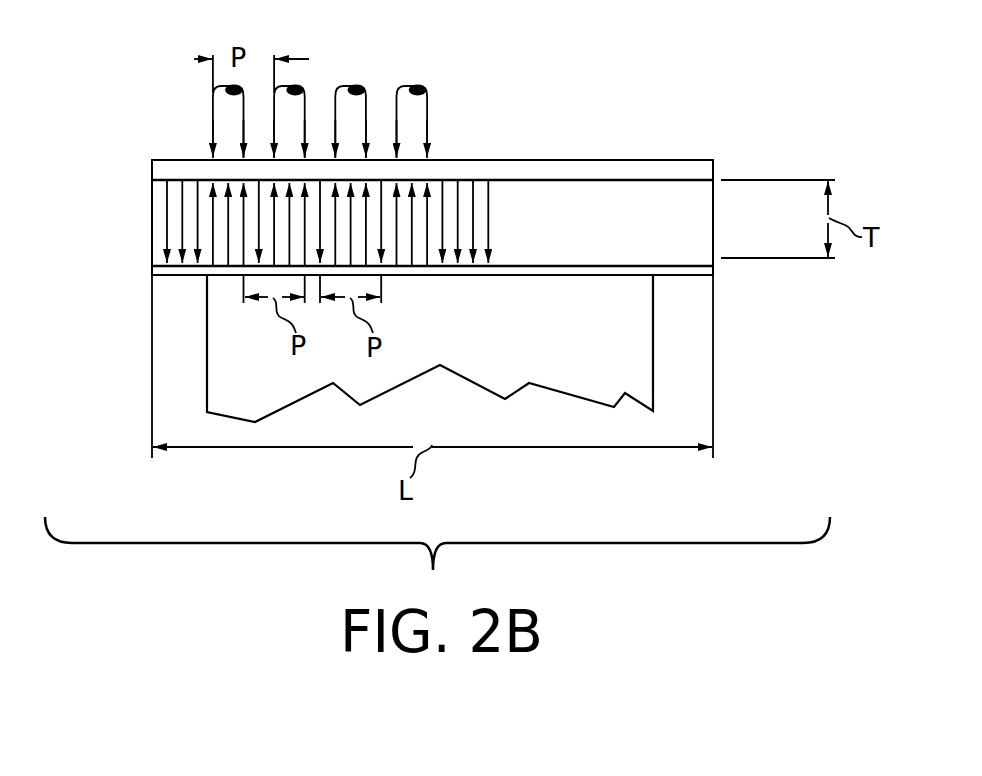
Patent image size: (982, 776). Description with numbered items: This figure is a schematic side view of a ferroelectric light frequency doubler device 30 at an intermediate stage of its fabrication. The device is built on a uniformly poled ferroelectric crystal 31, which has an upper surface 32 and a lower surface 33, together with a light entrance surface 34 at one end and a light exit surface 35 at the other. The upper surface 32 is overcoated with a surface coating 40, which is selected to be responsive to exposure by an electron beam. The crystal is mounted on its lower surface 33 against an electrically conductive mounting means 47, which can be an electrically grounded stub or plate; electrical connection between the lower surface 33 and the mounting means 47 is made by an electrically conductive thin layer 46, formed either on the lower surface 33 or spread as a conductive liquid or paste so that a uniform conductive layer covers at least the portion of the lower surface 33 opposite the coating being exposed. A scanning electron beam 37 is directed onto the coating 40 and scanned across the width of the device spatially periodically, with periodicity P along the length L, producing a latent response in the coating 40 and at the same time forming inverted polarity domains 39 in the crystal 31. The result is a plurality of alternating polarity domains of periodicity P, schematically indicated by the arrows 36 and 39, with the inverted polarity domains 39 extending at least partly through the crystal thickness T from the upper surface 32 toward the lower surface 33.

The ferroelectric light frequency doubler device 30 is at (128, 159).
The ferroelectric crystal 31 is at (152, 268).
The upper surface 32 is at (640, 181).
The lower surface 33 is at (645, 265).
The light entrance surface 34 is at (151, 193).
The light exit surface 35 is at (714, 212).
The arrows indicating original polarity domains 36 is at (198, 250).
The scanning electron beam 37 is at (352, 87).
The inverted polarity domains 39 is at (396, 252).
The surface coating 40 is at (715, 168).
The electrically conductive thin layer 46 is at (714, 272).
The electrically conductive mounting means 47 is at (582, 377).